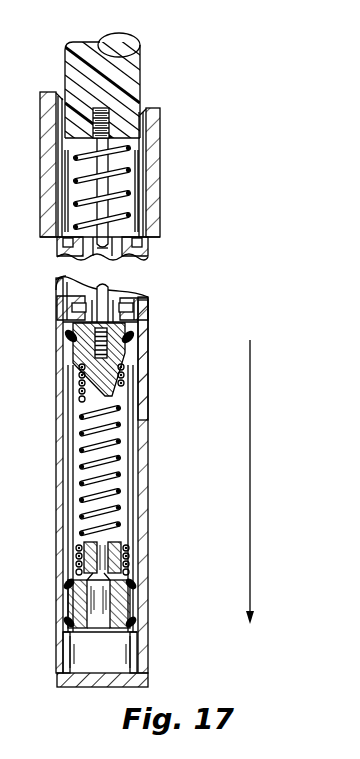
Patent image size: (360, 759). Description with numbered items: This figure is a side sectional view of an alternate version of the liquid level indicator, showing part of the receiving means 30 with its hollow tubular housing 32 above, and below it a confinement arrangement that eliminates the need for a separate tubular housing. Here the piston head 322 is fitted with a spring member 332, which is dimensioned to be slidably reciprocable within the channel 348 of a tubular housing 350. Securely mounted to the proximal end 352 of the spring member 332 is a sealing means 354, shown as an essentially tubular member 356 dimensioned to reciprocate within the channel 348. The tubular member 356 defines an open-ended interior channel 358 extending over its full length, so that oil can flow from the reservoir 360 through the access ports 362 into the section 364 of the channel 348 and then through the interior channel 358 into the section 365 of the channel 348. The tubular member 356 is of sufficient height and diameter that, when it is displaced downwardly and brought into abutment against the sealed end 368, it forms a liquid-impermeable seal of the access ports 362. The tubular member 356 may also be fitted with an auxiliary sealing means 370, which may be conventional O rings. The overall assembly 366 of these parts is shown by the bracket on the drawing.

The receiving means 30 is at (158, 439).
The hollow tubular housing 32 is at (148, 314).
The piston head 322 is at (126, 352).
The spring member 332 is at (123, 473).
The channel 348 is at (117, 463).
The tubular housing 350 is at (158, 415).
The proximal end 352 is at (123, 550).
The sealing means 354 is at (130, 602).
The tubular member 356 is at (134, 621).
The interior channel 358 is at (107, 632).
The reservoir 360 is at (164, 658).
The access ports 362 is at (137, 656).
The section of channel 364 is at (70, 652).
The section of channel 365 is at (106, 507).
The tool assembly 366 is at (252, 424).
The sealed end 368 is at (146, 682).
The auxiliary sealing means 370 is at (134, 585).